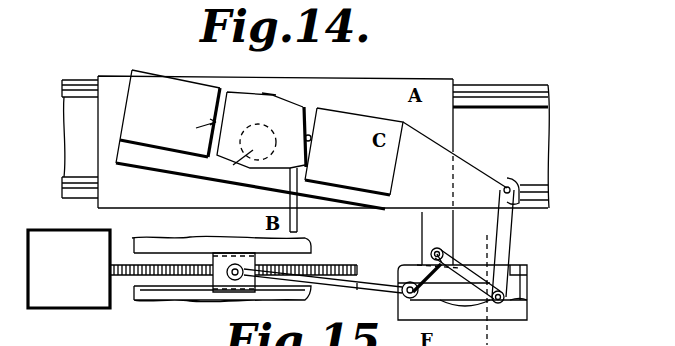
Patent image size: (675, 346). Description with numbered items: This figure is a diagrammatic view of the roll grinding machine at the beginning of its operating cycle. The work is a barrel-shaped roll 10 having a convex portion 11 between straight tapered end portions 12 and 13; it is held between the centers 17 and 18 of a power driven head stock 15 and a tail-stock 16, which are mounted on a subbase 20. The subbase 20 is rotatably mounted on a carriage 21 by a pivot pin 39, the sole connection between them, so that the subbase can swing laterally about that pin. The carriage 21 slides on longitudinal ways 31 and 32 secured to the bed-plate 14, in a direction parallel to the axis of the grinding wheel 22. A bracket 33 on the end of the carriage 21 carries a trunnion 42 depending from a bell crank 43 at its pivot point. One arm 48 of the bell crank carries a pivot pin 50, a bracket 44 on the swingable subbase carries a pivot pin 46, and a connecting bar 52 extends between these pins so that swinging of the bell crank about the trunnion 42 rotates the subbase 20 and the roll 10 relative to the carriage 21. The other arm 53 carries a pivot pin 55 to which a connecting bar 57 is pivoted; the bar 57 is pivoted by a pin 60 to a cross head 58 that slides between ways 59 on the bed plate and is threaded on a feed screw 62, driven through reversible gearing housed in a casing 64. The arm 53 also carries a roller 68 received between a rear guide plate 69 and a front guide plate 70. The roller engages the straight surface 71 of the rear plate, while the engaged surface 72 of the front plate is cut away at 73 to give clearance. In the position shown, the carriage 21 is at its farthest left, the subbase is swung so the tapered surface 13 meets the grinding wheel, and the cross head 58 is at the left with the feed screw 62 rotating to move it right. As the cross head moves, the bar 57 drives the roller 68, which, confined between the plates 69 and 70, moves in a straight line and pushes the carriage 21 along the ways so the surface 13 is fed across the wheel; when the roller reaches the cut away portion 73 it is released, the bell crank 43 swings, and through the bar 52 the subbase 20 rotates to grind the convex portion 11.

The roll 10 is at (254, 123).
The convex portion 11 is at (268, 93).
The tapering end portion 12 is at (242, 92).
The tapering end portion 13 is at (302, 104).
The bed-plate 14 is at (497, 120).
The head stock 15 is at (165, 97).
The tail-stock 16 is at (355, 127).
The center 17 is at (196, 130).
The center 18 is at (311, 140).
The subbase 20 is at (163, 162).
The carriage 21 is at (446, 90).
The grinding wheel 22 is at (298, 221).
The way 31 is at (67, 185).
The way 32 is at (68, 90).
The bracket 33 is at (429, 223).
The pivot pin 39 is at (230, 166).
The trunnion 42 is at (443, 253).
The bell crank 43 is at (429, 265).
The bracket 44 is at (487, 175).
The pivot pin 46 is at (511, 185).
The arm 48 is at (473, 278).
The pivot pin 50 is at (505, 295).
The connecting link or bar 52 is at (508, 228).
The arm 53 is at (424, 264).
The pivot pin 55 is at (393, 293).
The connecting bar or link 57 is at (357, 283).
The cross head 58 is at (222, 283).
The ways 59 is at (157, 290).
The pivot pin 60 is at (236, 268).
The feed screw 62 is at (127, 276).
The casing 64 is at (80, 286).
The roller 68 is at (409, 298).
The rear guide plate 69 is at (528, 266).
The front guide plate 70 is at (524, 321).
The surface 71 is at (533, 290).
The engaged surface 72 is at (527, 300).
The cut away portion 73 is at (468, 303).